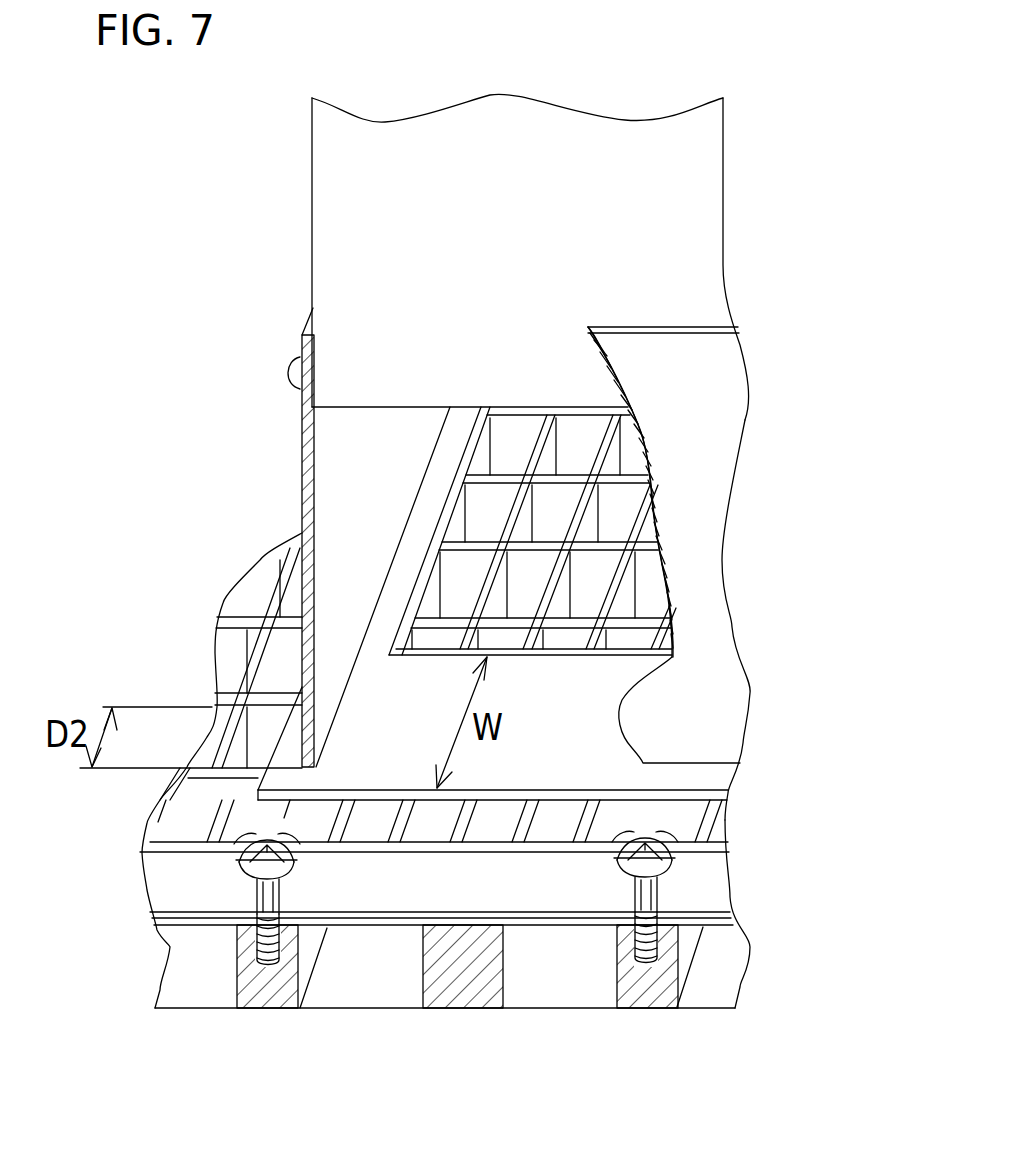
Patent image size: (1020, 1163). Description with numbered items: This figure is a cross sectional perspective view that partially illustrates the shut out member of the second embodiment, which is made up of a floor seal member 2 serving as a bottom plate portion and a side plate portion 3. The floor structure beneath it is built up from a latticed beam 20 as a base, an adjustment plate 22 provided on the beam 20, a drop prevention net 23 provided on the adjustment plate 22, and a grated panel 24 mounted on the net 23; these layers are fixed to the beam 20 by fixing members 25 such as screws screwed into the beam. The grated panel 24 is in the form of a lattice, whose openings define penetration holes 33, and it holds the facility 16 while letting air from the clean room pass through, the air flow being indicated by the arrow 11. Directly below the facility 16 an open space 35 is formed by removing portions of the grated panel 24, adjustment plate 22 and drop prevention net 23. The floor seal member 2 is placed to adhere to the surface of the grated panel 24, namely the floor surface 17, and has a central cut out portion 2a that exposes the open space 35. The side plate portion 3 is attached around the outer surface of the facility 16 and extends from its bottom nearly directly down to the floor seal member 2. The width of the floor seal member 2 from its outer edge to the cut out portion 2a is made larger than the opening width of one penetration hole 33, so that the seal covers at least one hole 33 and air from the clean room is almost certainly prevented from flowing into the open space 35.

The floor seal member 2 is at (617, 723).
The central cut out portion 2a is at (415, 600).
The side plate portion 3 is at (300, 502).
The arrow 11 is at (248, 475).
The facility 16 is at (703, 263).
The floor surface 17 is at (375, 840).
The latticed beam 20 is at (667, 973).
The adjustment plate 22 is at (733, 920).
The drop prevention net 23 is at (733, 912).
The grated panel 24 is at (613, 580).
The fixing member 25 is at (262, 890).
The penetration hole 33 is at (270, 667).
The open space 35 is at (610, 493).